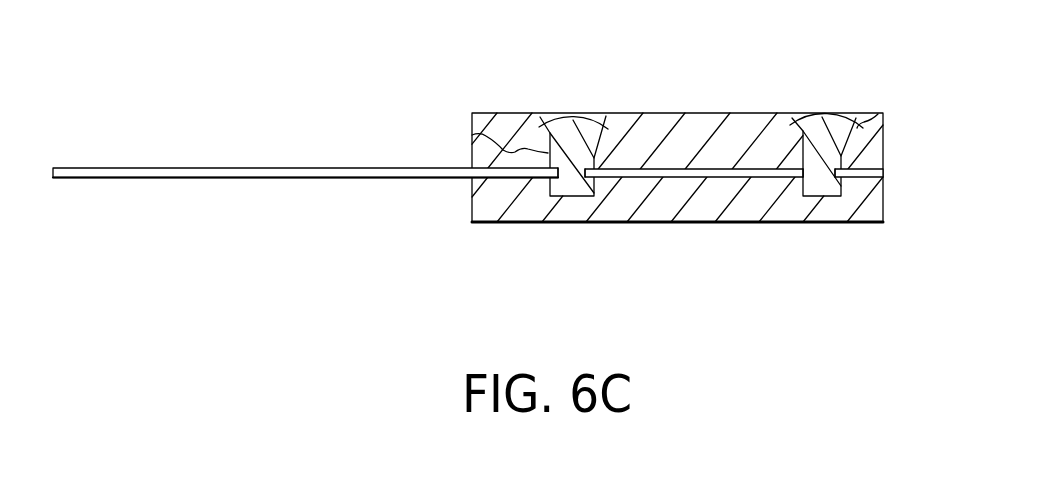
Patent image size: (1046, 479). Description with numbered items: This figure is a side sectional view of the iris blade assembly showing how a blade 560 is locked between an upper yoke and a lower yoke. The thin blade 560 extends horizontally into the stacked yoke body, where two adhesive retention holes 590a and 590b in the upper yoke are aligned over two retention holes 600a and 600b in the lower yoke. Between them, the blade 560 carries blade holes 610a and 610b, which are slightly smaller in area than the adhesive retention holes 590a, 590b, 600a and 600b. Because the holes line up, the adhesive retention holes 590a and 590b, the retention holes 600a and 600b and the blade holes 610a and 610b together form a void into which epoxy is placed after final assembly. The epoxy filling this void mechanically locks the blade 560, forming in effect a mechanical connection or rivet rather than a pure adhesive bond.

The blade 560 is at (272, 148).
The adhesive retention hole 590a is at (472, 135).
The adhesive retention hole 590b is at (878, 114).
The retention hole 600a is at (568, 196).
The retention hole 600b is at (814, 197).
The blade hole 610a is at (553, 177).
The blade hole 610b is at (848, 176).